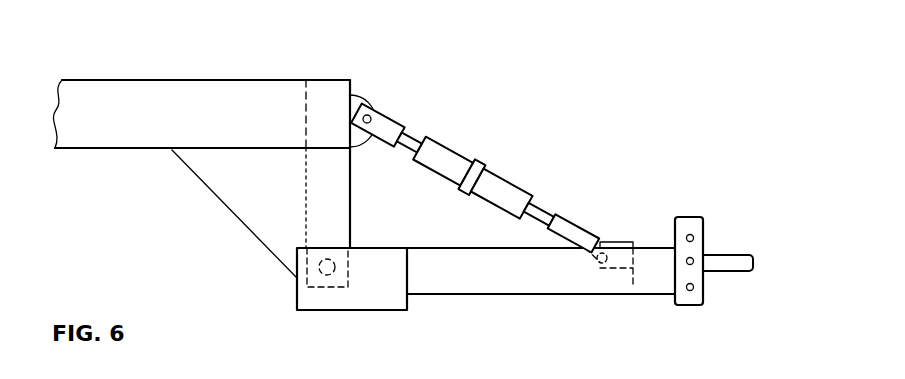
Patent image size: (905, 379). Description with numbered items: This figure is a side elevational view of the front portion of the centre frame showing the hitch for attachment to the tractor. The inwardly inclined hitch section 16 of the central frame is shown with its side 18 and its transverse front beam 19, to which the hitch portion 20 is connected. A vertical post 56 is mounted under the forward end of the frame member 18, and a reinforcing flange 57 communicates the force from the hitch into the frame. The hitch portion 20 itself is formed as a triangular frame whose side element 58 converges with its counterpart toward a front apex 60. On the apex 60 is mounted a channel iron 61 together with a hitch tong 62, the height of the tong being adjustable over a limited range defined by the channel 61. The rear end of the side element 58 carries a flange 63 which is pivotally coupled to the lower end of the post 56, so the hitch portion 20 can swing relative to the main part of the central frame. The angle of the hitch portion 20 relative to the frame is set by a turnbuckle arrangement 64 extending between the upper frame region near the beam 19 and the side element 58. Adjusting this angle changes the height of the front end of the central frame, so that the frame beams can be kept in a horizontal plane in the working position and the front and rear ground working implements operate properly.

The hitch section 16 is at (126, 74).
The side 18 is at (218, 102).
The transverse front beam 19 is at (330, 98).
The hitch section 20 is at (563, 182).
The vertical post 56 is at (340, 190).
The reinforcing flange 57 is at (228, 178).
The side element 58 is at (515, 278).
The front apex 60 is at (664, 273).
The channel iron 61 is at (693, 220).
The hitch tong 62 is at (727, 259).
The flange 63 is at (307, 298).
The turnbuckle arrangement 64 is at (458, 151).